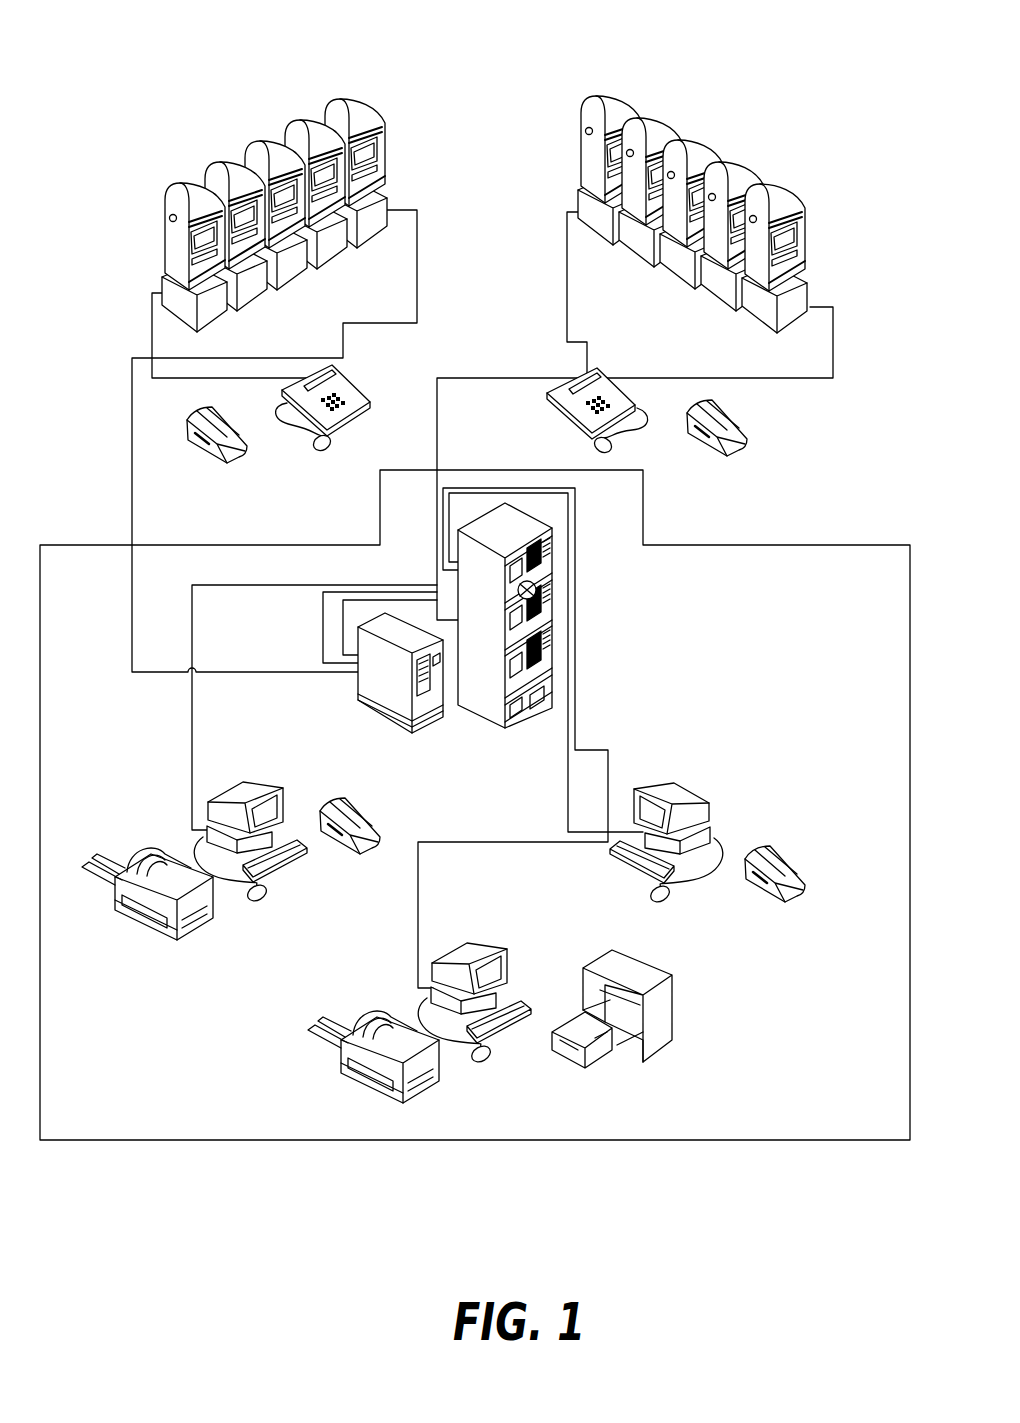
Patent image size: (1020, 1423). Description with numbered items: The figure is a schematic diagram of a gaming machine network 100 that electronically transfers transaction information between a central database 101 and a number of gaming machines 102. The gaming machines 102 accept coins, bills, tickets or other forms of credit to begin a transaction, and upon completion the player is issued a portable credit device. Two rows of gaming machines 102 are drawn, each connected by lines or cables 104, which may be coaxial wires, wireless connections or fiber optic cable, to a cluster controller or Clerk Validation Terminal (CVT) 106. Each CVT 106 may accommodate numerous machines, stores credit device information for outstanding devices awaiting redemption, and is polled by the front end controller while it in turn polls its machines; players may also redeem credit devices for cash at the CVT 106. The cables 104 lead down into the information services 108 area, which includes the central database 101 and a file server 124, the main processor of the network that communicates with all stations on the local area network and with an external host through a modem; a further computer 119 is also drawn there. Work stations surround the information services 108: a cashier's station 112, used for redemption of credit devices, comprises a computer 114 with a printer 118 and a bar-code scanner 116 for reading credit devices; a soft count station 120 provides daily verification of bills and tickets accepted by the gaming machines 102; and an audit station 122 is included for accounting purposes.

The gaming machine network 100 is at (152, 65).
The gaming machines 102 is at (373, 107).
The lines or cables 104 is at (152, 310).
The Clerk Validation Terminal (CVT) 106 is at (370, 380).
The central database 101 is at (555, 617).
The file server 124 is at (555, 684).
The information services computer 119 is at (357, 680).
The information services 108 is at (417, 738).
The audit station 122 is at (231, 874).
The cashier's station 112 is at (720, 940).
The computer 114 is at (714, 775).
The bar-code scanner 116 is at (657, 893).
The printer 118 is at (833, 856).
The soft count station 120 is at (490, 1039).